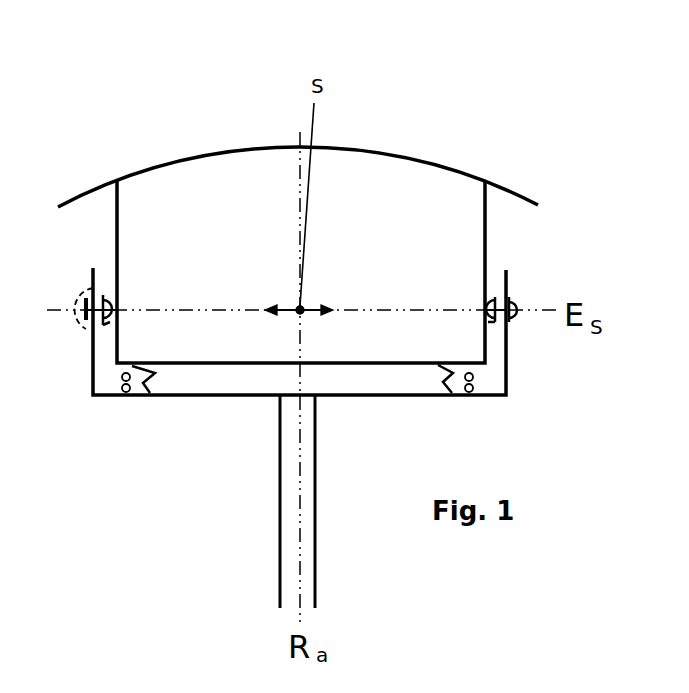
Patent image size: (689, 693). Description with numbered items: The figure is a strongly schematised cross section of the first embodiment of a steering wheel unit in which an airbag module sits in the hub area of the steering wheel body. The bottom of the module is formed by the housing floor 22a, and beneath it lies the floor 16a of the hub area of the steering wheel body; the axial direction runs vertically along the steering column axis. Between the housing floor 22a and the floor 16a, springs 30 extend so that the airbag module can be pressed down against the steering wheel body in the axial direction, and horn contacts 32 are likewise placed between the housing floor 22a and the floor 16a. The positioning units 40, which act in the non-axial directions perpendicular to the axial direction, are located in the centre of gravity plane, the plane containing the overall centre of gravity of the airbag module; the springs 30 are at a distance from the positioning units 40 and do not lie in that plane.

The floor of the hub area 16a is at (355, 395).
The housing floor 22a is at (237, 363).
The springs 30 is at (147, 391).
The horn contacts 32 is at (122, 385).
The positioning units 40 is at (72, 302).